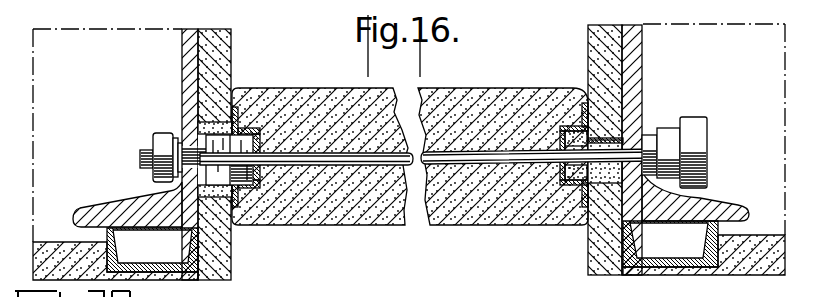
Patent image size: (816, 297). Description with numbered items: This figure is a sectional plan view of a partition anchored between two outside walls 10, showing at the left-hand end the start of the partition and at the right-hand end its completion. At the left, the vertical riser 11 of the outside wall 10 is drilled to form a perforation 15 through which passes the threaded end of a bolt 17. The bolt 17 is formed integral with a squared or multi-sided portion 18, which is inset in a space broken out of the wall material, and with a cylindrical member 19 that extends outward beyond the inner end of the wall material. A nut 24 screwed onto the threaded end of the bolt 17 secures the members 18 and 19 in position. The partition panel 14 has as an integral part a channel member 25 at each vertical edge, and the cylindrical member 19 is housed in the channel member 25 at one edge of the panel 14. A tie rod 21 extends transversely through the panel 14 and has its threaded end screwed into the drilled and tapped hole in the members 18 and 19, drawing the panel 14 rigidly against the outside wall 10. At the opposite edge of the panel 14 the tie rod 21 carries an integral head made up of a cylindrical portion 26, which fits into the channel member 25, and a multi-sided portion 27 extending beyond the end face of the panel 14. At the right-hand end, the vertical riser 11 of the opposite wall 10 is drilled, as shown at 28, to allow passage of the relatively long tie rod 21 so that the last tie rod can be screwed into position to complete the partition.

The outside wall 10 is at (752, 272).
The vertical riser 11 is at (716, 199).
The partition panel 14 is at (356, 210).
The perforation 15 is at (182, 127).
The bolt 17 is at (185, 229).
The non-cylindrical portion 18 is at (218, 146).
The cylindrical member 19 is at (240, 147).
The tie rod 21 is at (320, 163).
The nut 24 is at (162, 142).
The channel member 25 is at (250, 186).
The cylindrical portion 26 is at (665, 128).
The non-cylindrical portion 27 is at (694, 119).
The drilled hole 28 is at (640, 98).